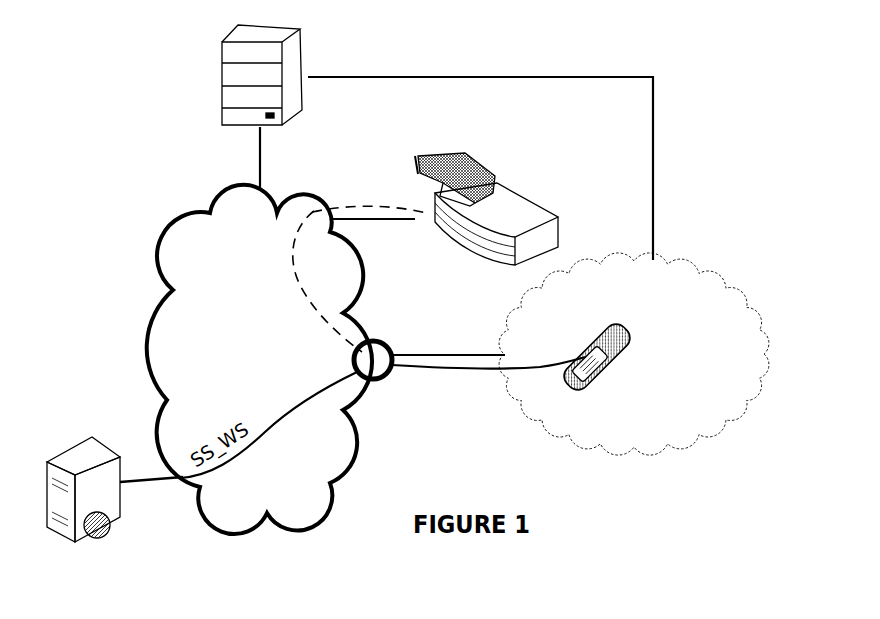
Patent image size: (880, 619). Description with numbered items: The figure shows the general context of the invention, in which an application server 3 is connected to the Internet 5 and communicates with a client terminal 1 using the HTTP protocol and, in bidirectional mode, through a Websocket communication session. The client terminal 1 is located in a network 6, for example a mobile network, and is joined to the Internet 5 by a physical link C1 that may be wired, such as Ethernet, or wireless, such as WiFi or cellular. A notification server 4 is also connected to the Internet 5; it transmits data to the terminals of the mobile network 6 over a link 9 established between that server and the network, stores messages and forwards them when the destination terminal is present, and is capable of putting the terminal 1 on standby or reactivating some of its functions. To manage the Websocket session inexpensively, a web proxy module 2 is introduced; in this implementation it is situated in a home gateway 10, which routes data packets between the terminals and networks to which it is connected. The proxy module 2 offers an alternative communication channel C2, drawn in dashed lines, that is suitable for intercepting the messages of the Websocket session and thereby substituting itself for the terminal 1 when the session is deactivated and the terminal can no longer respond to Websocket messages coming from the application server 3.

The client terminal 1 is at (630, 350).
The web proxy module 2 is at (482, 162).
The application server 3 is at (37, 457).
The notification server 4 is at (303, 48).
The Internet 5 is at (155, 252).
The mobile network 6 is at (737, 290).
The link 9 is at (660, 137).
The home gateway 10 is at (547, 207).
The physical link C1 is at (432, 357).
The alternative communication channel C2 is at (383, 225).